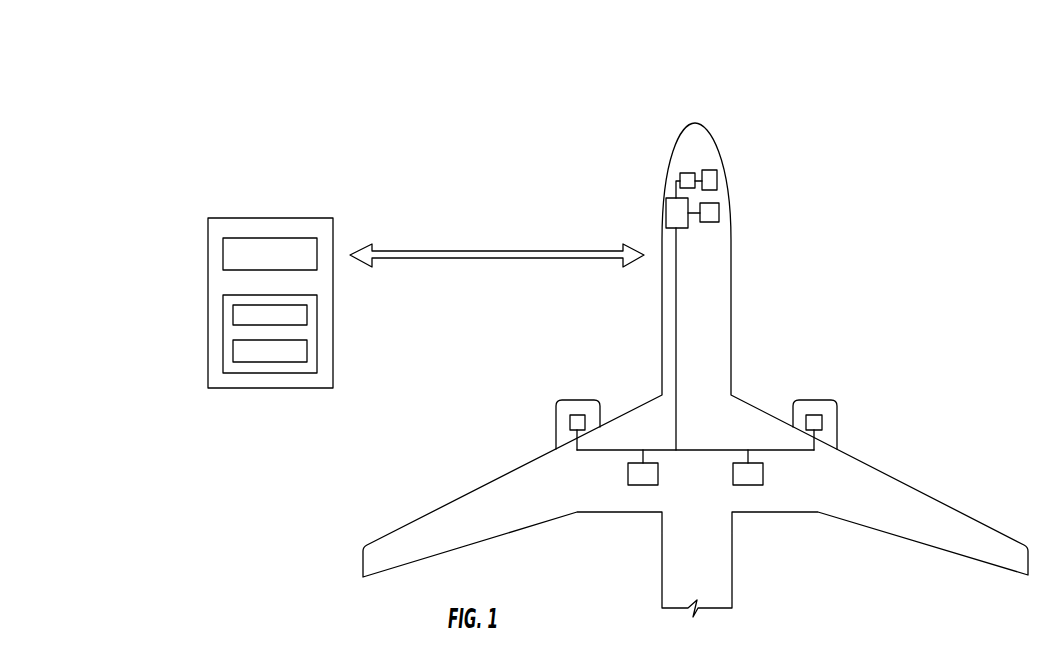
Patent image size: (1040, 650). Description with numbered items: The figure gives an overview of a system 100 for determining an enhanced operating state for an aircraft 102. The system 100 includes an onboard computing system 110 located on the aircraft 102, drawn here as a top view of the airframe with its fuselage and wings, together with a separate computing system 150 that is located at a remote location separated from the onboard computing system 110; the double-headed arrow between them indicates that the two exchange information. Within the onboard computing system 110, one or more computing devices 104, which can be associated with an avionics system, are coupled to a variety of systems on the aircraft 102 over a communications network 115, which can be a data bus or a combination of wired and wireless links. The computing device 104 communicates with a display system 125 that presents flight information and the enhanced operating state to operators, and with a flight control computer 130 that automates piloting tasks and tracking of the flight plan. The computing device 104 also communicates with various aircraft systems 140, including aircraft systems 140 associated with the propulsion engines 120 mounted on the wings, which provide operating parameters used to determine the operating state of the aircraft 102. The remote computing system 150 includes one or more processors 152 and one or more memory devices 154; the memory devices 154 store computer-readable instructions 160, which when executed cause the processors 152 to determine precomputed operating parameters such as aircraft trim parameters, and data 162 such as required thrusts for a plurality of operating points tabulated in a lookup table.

The system 100 is at (563, 94).
The onboard computing system 110 is at (820, 199).
The aircraft 102 is at (722, 293).
The computing device 104 is at (666, 213).
The communications network 115 is at (676, 360).
The propulsion engine 120 is at (580, 400).
The display system 125 is at (710, 170).
The flight control computer 130 is at (682, 173).
The aircraft systems 140 is at (719, 212).
The computing system 150 is at (333, 237).
The processor 152 is at (223, 256).
The memory device 154 is at (223, 311).
The computer-readable instructions 160 is at (307, 317).
The data 162 is at (307, 352).